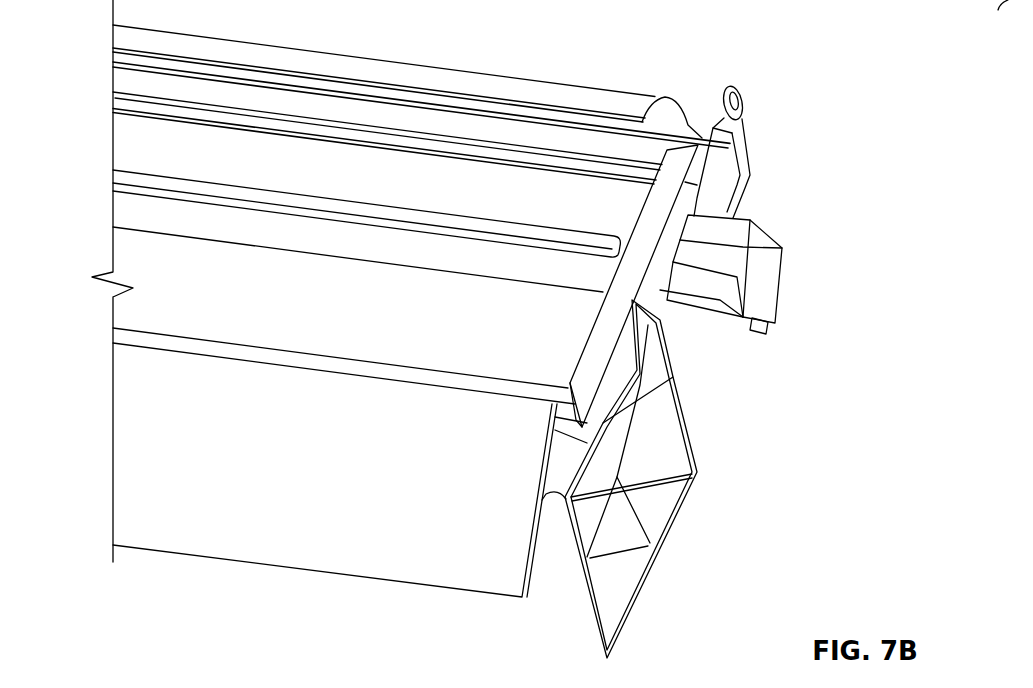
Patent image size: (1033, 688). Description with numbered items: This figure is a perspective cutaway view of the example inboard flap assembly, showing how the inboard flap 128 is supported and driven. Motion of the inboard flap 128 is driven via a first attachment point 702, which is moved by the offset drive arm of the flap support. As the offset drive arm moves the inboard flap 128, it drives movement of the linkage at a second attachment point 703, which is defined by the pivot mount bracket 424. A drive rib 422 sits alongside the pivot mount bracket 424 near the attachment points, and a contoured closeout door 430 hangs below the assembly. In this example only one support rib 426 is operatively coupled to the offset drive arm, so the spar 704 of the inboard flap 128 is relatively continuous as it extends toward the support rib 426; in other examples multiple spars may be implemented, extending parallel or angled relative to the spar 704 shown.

The inboard flap 128 is at (375, 52).
The spar 704 is at (243, 222).
The support rib 426 is at (640, 237).
The first attachment point 702 is at (722, 93).
The drive rib 422 is at (735, 131).
The pivot mount bracket 424 is at (778, 268).
The second attachment point 703 is at (763, 330).
The closeout door 430 is at (607, 537).